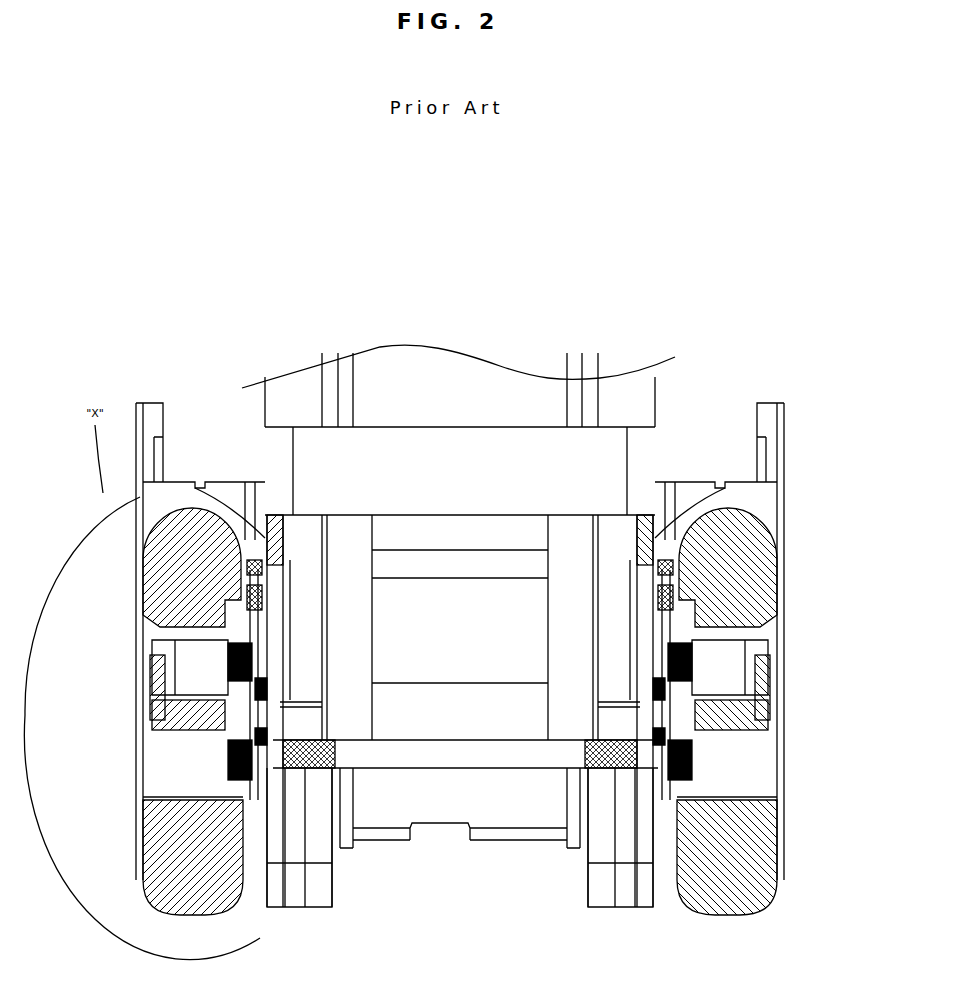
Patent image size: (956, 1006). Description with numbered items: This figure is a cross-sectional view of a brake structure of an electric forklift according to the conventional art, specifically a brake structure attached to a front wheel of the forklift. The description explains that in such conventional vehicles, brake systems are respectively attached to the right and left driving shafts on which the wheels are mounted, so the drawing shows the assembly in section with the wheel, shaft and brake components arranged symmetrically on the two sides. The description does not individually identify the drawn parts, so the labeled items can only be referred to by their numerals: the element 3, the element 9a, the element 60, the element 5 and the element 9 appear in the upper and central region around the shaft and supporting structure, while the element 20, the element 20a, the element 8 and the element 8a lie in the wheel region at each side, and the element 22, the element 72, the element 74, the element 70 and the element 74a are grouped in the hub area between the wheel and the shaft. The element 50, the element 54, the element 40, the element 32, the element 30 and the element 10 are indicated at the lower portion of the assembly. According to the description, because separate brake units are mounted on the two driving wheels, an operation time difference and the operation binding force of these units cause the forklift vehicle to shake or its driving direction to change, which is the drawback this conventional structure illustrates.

The stator 3 is at (286, 392).
The shaft 9a is at (320, 617).
The end plate 60 is at (354, 717).
The frame bracket 5 is at (223, 482).
The bearing housing 9 is at (256, 527).
The wheel rim 20 is at (152, 607).
The tire upper section 20a is at (235, 586).
The tire 8 is at (160, 852).
The rim flange 22 is at (148, 657).
The seal 72 is at (185, 718).
The seal ring 74 is at (175, 762).
The sealing unit 70 is at (72, 782).
The seal lip 74a is at (165, 797).
The tire bead 8a is at (160, 815).
The hub plate 50 is at (285, 908).
The bracket 54 is at (305, 906).
The housing 40 is at (258, 870).
The rotor 32 is at (237, 870).
The wheel hub 30 is at (207, 905).
The in-wheel motor 10 is at (195, 900).